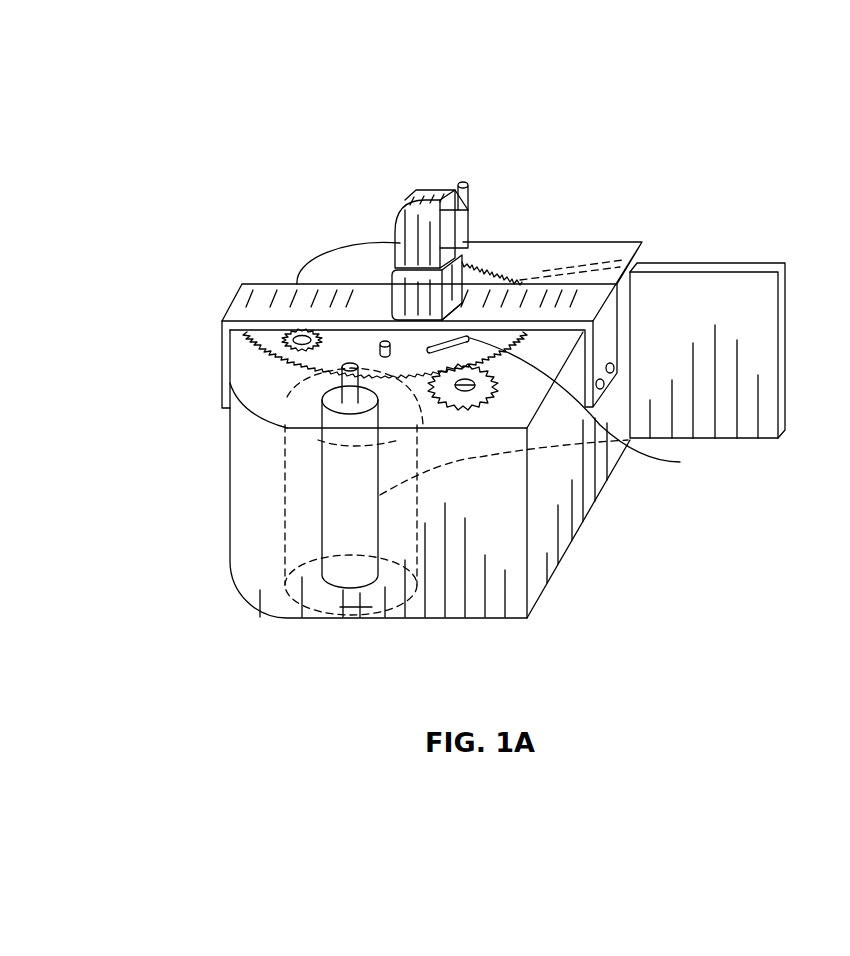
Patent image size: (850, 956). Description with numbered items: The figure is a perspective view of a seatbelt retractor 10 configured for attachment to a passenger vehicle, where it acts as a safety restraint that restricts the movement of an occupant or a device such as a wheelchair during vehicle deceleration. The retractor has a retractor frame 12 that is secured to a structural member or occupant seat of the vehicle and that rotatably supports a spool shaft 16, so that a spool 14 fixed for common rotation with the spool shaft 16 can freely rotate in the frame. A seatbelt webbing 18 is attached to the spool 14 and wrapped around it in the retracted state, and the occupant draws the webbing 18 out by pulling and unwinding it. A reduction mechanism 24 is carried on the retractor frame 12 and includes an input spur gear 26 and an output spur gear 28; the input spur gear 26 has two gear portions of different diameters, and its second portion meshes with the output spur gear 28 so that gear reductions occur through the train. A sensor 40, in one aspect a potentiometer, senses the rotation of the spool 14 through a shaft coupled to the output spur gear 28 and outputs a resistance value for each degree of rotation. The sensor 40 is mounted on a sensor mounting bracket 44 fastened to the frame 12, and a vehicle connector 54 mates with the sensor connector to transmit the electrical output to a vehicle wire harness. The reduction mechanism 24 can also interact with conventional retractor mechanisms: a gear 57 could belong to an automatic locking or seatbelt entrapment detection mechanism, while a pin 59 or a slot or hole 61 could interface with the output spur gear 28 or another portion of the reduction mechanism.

The seatbelt retractor 10 is at (345, 626).
The retractor frame 12 is at (470, 618).
The spool 14 is at (322, 480).
The spool shaft 16 is at (357, 607).
The seatbelt webbing 18 is at (718, 267).
The reduction mechanism 24 is at (340, 182).
The input spur gear 26 is at (257, 353).
The output spur gear 28 is at (467, 357).
The sensor 40 is at (417, 202).
The sensor mounting bracket 44 is at (252, 293).
The vehicle connector 54 is at (465, 231).
The gear 57 is at (433, 377).
The pin 59 is at (385, 344).
The slot or hole 61 is at (592, 408).